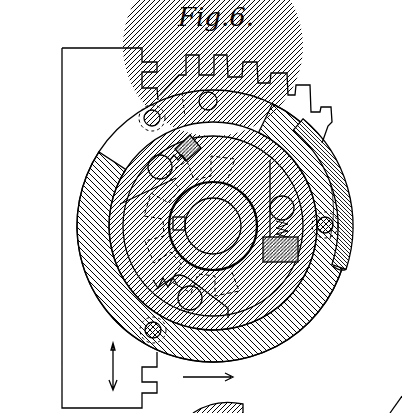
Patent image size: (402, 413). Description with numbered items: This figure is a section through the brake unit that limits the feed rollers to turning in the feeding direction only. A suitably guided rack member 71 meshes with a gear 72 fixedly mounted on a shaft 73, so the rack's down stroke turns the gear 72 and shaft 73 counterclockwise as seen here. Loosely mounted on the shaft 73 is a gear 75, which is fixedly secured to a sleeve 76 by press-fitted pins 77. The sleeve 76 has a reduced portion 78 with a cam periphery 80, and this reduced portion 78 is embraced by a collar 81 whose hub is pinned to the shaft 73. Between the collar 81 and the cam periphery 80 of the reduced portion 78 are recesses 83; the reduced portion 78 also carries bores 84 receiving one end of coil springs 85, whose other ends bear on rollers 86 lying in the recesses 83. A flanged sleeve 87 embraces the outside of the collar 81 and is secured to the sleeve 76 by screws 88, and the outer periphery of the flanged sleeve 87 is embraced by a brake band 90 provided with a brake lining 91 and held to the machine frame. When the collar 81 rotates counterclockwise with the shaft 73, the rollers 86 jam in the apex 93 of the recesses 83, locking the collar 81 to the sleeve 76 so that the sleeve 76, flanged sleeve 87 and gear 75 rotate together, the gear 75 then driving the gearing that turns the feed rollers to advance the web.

The rack member 71 is at (62, 183).
The gear 72 is at (104, 283).
The shaft 73 is at (234, 254).
The gear 75 is at (320, 103).
The sleeve 76 is at (100, 160).
The press-fitted pins 77 is at (217, 102).
The reduced portion 78 is at (319, 299).
The cam periphery 80 is at (289, 340).
The collar 81 is at (300, 283).
The recesses 83 is at (227, 376).
The bores 84 is at (275, 262).
The coil springs 85 is at (184, 282).
The rollers 86 is at (271, 205).
The flanged sleeve 87 is at (108, 313).
The screws 88 is at (145, 114).
The brake band 90 is at (343, 238).
The brake lining 91 is at (347, 268).
The apex 93 is at (268, 172).